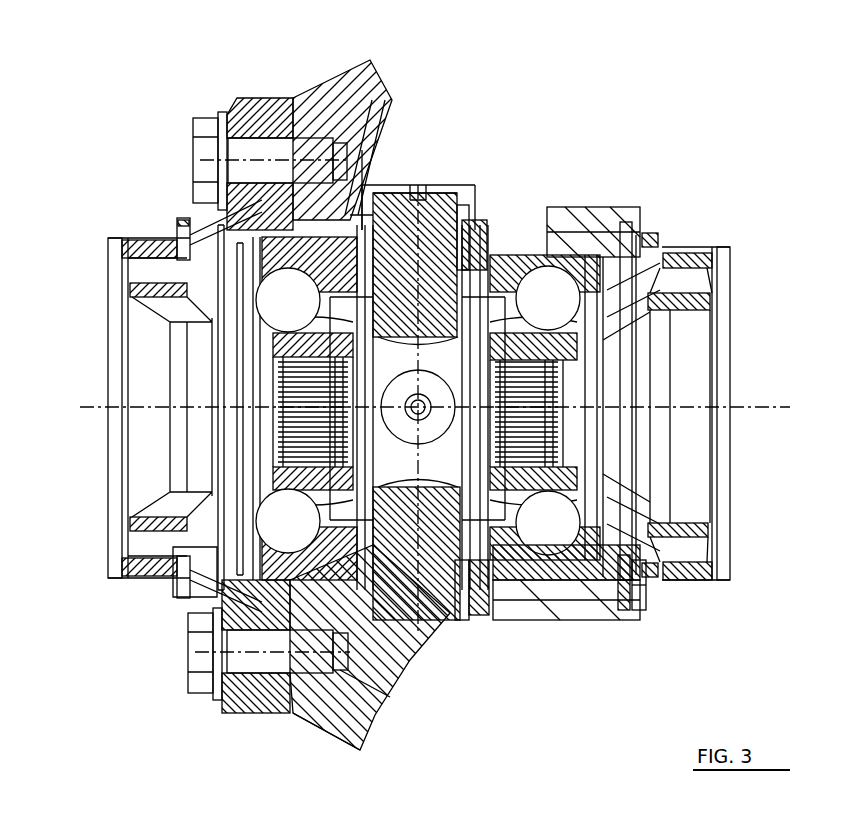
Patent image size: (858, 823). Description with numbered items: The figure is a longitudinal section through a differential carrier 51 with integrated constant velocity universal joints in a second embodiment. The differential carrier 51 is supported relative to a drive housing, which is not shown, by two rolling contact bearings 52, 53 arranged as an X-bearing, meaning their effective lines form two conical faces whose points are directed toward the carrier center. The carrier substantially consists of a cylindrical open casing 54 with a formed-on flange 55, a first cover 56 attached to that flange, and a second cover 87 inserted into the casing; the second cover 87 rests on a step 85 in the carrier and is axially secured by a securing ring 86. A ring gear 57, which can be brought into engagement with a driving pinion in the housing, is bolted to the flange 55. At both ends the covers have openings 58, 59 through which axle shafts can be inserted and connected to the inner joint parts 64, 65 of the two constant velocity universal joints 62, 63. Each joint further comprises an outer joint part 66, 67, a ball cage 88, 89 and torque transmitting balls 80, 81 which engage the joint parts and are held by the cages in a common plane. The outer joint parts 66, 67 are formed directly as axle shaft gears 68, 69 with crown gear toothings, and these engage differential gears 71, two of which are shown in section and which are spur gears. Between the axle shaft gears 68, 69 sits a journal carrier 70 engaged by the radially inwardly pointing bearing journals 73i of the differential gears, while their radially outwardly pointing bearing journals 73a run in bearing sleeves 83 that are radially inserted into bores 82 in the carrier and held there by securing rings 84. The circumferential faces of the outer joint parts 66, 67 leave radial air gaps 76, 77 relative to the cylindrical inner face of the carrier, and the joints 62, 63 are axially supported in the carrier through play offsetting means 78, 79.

The differential carrier 51 is at (560, 178).
The bearing 52 is at (145, 238).
The bearing 53 is at (706, 250).
The cylindrical open casing 54 is at (590, 215).
The flange 55 is at (262, 100).
The first cover 56 is at (238, 100).
The ring gear 57 is at (318, 92).
The opening 58 is at (140, 378).
The opening 59 is at (700, 392).
The constant velocity universal joint 62 is at (213, 205).
The constant velocity universal joint 63 is at (522, 200).
The inner joint part 64 is at (298, 478).
The inner joint part 65 is at (548, 472).
The outer joint part 66 is at (220, 222).
The outer joint part 67 is at (551, 288).
The axle shaft gear 68 is at (398, 628).
The axle shaft gear 69 is at (465, 613).
The journal carrier 70 is at (488, 613).
The differential gear 71 is at (418, 607).
The radially outwardly pointing bearing journal 73a is at (450, 198).
The radially inwardly pointing bearing journal 73i is at (474, 200).
The radial air gap 76 is at (392, 695).
The radial air gap 77 is at (520, 587).
The play offsetting means 78 is at (203, 590).
The play offsetting means 79 is at (593, 613).
The torque transmitting ball 80 is at (198, 232).
The torque transmitting ball 81 is at (626, 222).
The bore 82 is at (472, 218).
The bearing sleeve 83 is at (372, 195).
The securing ring 84 is at (382, 190).
The step 85 is at (542, 610).
The securing ring 86 is at (625, 613).
The second cover 87 is at (667, 258).
The ball cage 88 is at (178, 232).
The ball cage 89 is at (645, 233).